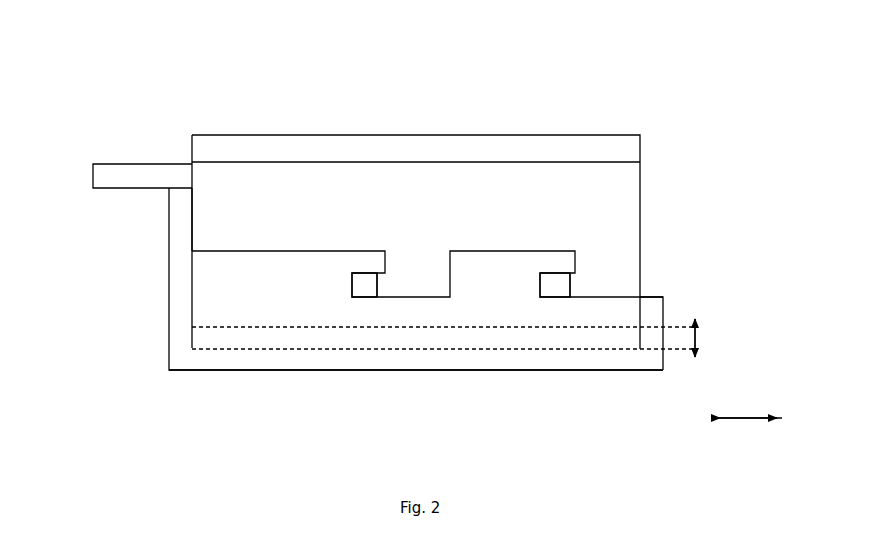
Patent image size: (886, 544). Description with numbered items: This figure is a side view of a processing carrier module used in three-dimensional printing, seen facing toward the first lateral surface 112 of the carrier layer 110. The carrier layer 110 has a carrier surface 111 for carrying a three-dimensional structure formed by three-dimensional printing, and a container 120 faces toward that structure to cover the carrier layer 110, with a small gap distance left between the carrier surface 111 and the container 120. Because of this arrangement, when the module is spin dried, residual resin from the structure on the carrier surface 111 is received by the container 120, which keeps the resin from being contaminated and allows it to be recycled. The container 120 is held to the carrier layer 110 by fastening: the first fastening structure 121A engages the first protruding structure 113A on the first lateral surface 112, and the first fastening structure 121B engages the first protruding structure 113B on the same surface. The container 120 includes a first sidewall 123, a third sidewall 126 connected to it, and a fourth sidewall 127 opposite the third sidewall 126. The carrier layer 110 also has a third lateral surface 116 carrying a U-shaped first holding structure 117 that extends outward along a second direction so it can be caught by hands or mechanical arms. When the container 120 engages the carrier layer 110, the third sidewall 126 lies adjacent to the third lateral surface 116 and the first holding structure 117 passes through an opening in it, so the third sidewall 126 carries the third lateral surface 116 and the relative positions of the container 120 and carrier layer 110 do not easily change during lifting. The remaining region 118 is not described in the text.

The carrier layer 110 is at (450, 85).
The carrier surface 111 is at (550, 335).
The first lateral surface 112 is at (620, 225).
The first protruding structure 113A is at (366, 288).
The first protruding structure 113B is at (555, 288).
The third lateral surface 116 is at (190, 209).
The first holding structure 117 is at (93, 177).
The top cover 118 is at (642, 188).
The container 120 is at (370, 380).
The first fastening structure 121A is at (357, 290).
The first fastening structure 121B is at (547, 290).
The first sidewall 123 is at (205, 292).
The third sidewall 126 is at (188, 246).
The fourth sidewall 127 is at (663, 312).